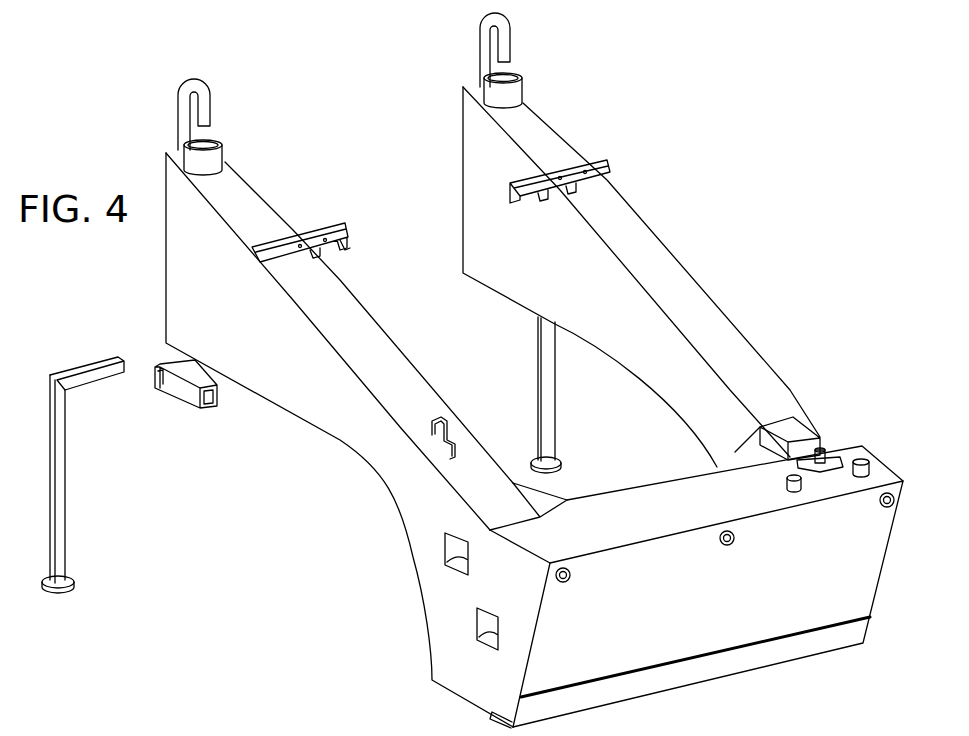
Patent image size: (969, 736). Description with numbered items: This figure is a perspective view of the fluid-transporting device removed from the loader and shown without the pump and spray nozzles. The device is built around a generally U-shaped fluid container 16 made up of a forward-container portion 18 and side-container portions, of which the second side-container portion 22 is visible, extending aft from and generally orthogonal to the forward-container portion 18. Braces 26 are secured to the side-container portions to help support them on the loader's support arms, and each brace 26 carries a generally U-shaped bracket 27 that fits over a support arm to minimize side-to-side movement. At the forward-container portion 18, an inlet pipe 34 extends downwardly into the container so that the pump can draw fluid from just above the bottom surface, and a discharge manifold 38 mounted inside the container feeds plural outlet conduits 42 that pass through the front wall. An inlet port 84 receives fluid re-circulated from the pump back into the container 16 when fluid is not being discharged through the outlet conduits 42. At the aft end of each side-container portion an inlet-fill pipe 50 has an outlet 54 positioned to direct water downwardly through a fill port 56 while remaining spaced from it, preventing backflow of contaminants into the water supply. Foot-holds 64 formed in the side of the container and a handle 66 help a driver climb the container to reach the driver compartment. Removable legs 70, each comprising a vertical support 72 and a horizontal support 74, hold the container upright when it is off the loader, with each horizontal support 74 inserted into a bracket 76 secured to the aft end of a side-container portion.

The fluid container 16 is at (706, 285).
The forward-container portion 18 is at (788, 612).
The second side-container portion 22 is at (625, 223).
The brace 26 is at (310, 230).
The U-shaped bracket 27 is at (347, 242).
The inlet pipe 34 is at (820, 458).
The discharge manifold 38 is at (862, 460).
The outlet conduit 42 is at (887, 510).
The inlet-fill pipe 50 is at (178, 132).
The outlet 54 is at (207, 120).
The fill port 56 is at (215, 163).
The foot-hold 64 is at (458, 568).
The handle 66 is at (453, 425).
The removable leg 70 is at (555, 420).
The vertical support 72 is at (550, 372).
The horizontal support 74 is at (84, 366).
The bracket 76 is at (180, 397).
The inlet port 84 is at (787, 482).